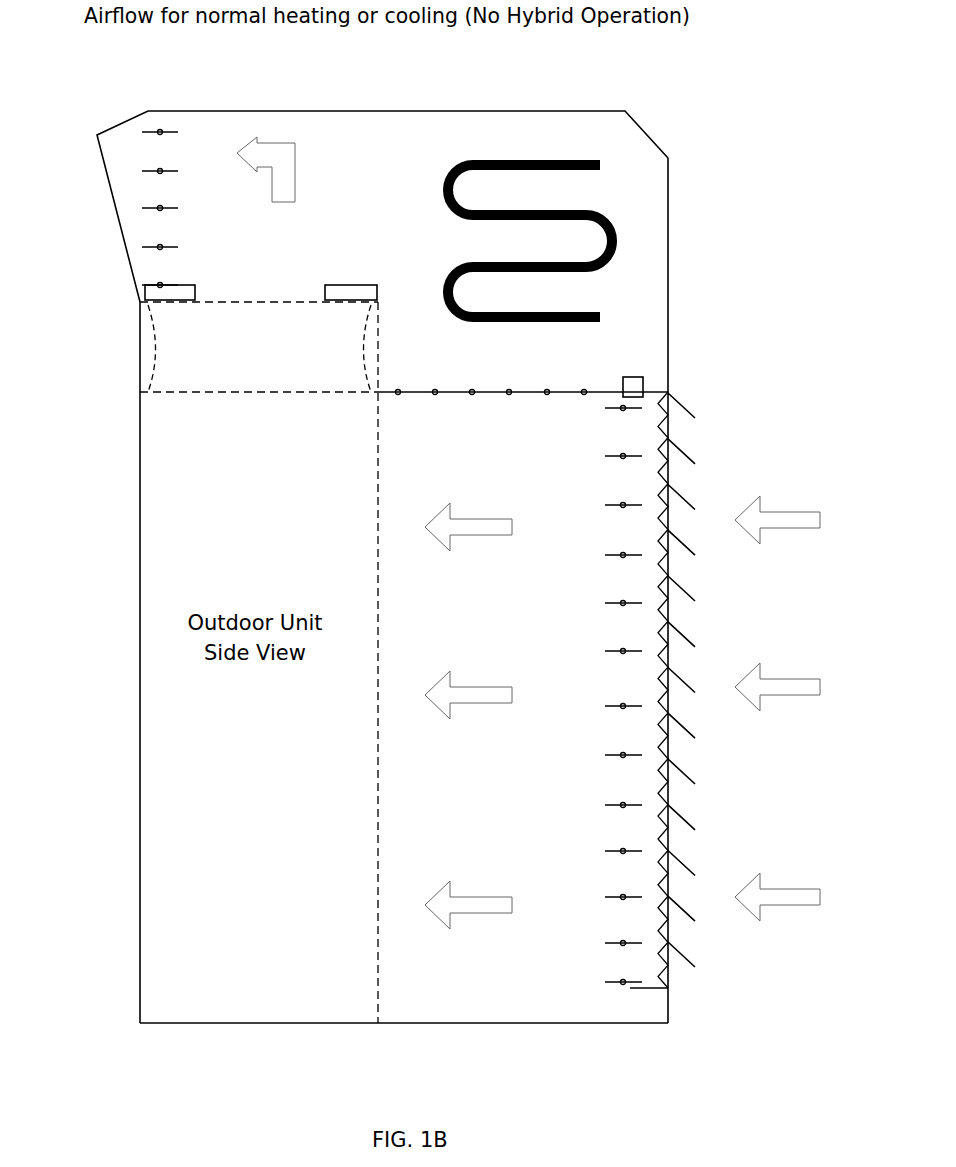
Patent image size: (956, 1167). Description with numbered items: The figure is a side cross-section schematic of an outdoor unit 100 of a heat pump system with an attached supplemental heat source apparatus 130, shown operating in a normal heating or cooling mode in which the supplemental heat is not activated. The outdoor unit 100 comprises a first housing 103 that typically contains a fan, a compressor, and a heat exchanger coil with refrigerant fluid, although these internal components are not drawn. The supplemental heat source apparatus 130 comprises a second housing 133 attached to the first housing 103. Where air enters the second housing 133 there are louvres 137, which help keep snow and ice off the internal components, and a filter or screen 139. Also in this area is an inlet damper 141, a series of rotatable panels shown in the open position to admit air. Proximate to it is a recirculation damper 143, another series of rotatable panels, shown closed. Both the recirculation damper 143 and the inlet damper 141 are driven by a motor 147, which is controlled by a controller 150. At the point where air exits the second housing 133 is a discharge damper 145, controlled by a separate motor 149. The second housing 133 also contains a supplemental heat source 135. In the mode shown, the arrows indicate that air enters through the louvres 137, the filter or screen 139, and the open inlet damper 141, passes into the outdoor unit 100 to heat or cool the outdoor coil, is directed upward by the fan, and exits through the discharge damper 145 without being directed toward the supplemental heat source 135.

The outdoor unit 100 is at (112, 594).
The first housing 103 is at (140, 703).
The supplemental heat source apparatus 130 is at (714, 143).
The second housing 133 is at (668, 255).
The supplemental heat source 135 is at (492, 160).
The louvres 137 is at (688, 405).
The filter or screen 139 is at (675, 470).
The inlet damper 141 is at (612, 558).
The recirculation damper 143 is at (487, 394).
The discharge damper 145 is at (170, 171).
The motor 147 is at (623, 377).
The motor 149 is at (190, 285).
The controller 150 is at (333, 285).